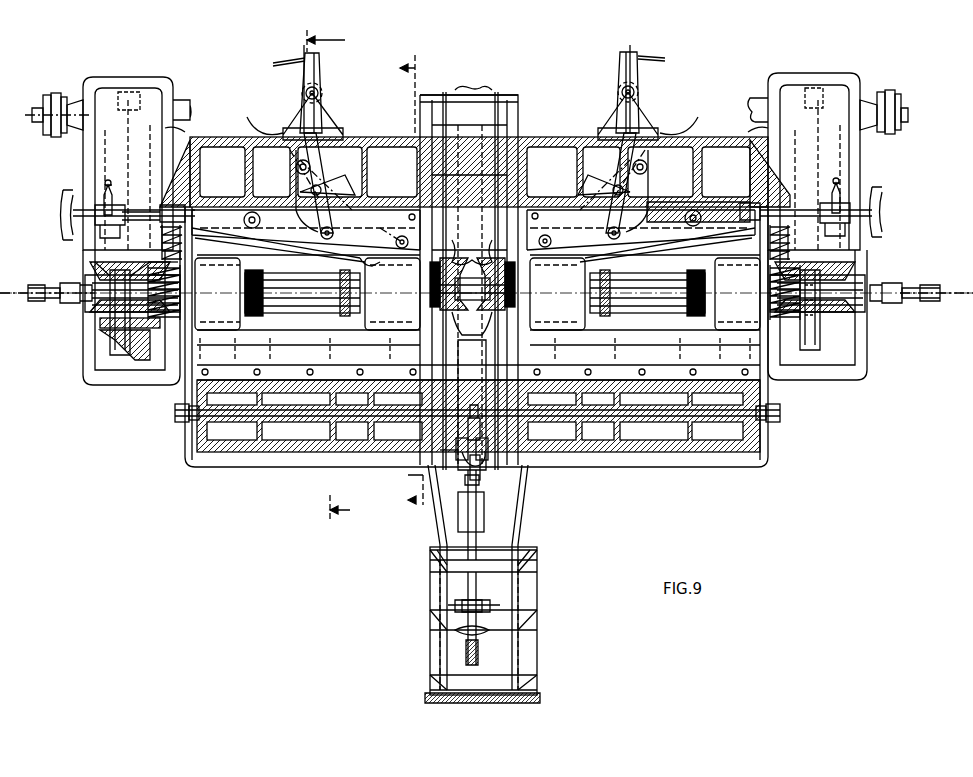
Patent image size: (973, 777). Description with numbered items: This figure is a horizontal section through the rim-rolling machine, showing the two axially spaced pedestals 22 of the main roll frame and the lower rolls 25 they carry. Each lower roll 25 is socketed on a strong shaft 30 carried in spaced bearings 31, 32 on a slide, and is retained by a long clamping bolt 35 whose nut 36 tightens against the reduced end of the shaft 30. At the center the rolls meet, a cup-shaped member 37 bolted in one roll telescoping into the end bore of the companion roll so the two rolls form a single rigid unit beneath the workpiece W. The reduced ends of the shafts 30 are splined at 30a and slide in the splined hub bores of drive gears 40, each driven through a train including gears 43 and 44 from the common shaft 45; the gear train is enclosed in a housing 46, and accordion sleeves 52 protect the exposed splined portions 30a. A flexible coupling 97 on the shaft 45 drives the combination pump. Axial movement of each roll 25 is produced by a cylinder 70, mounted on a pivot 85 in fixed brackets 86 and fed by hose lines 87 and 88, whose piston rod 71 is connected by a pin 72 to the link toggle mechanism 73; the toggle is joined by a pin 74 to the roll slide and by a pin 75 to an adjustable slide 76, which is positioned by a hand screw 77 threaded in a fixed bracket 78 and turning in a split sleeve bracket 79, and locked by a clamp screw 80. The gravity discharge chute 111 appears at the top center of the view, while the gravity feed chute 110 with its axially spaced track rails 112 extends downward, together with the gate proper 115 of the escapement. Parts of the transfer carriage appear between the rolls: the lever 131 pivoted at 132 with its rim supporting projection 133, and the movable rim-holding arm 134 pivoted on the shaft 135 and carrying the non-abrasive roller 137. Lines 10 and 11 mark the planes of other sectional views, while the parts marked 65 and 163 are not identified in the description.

The section line 10- 10 is at (403, 281).
The section line 11- 11 is at (334, 276).
The pedestals 22 is at (270, 452).
The lower rolls 25 is at (472, 391).
The shafts 30 is at (475, 293).
The splined portions 30a is at (163, 253).
The bearing 31 is at (475, 294).
The bearing 32 is at (477, 294).
The clamping bolts 35 is at (48, 308).
The nuts 36 is at (68, 280).
The cup-shaped member 37 is at (472, 271).
The drive gears 40 is at (135, 350).
The gear 43 is at (471, 175).
The gear 44 is at (810, 72).
The common shaft 45 is at (193, 102).
The housing 46 is at (85, 357).
The accordion sleeves 52 is at (160, 325).
The drive pulley 65 is at (892, 90).
The cylinder 70 is at (320, 68).
The piston rod 71 is at (320, 163).
The pin 72 is at (322, 195).
The link toggle mechanism 73 is at (283, 242).
The pin 74 is at (402, 236).
The pin 75 is at (258, 210).
The adjustable slide 76 is at (226, 212).
The hand screw 77 is at (62, 233).
The fixed bracket 78 is at (474, 231).
The split sleeve bracket 79 is at (128, 205).
The clamp screw 80 is at (115, 178).
The pivot 85 is at (319, 93).
The fixed brackets 86 is at (330, 115).
The flexible hose line 87 is at (472, 52).
The flexible hose line 88 is at (478, 115).
The flexible coupling 97 is at (60, 138).
The gravity feed chute 110 is at (505, 700).
The gravity discharge chute 111 is at (469, 271).
The track rails 112 is at (500, 680).
The gate proper 115 is at (500, 582).
The lever 131 is at (472, 485).
The pivot 132 is at (486, 505).
The rim supporting projection 133 is at (492, 469).
The movable rim-holding arm 134 is at (497, 439).
The shaft 135 is at (458, 446).
The roller 137 is at (484, 410).
The tie rod 163 is at (180, 430).
The workpiece W is at (472, 239).